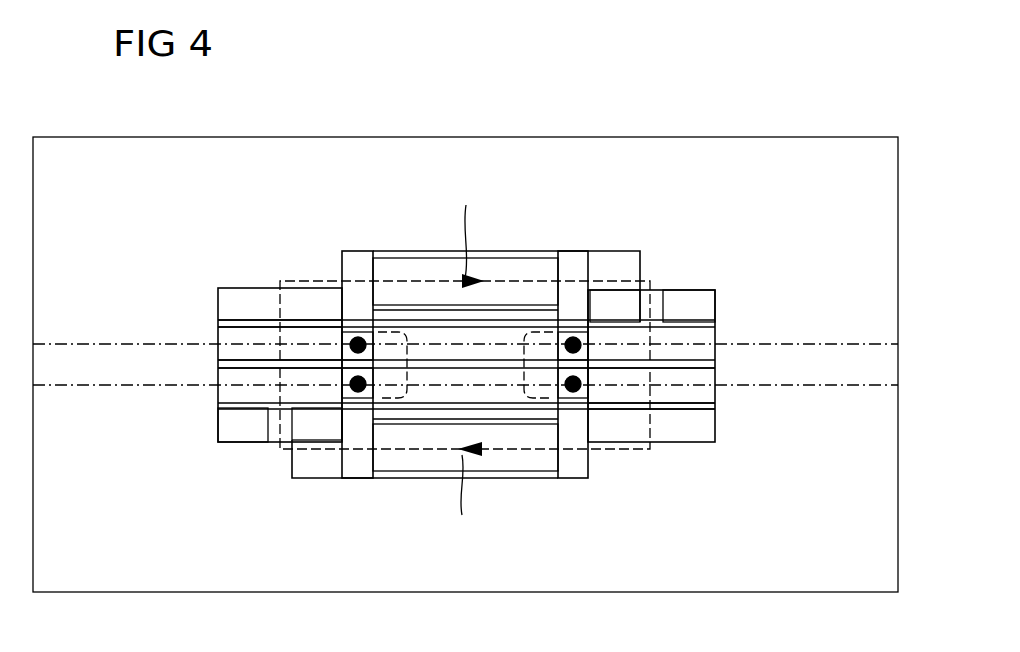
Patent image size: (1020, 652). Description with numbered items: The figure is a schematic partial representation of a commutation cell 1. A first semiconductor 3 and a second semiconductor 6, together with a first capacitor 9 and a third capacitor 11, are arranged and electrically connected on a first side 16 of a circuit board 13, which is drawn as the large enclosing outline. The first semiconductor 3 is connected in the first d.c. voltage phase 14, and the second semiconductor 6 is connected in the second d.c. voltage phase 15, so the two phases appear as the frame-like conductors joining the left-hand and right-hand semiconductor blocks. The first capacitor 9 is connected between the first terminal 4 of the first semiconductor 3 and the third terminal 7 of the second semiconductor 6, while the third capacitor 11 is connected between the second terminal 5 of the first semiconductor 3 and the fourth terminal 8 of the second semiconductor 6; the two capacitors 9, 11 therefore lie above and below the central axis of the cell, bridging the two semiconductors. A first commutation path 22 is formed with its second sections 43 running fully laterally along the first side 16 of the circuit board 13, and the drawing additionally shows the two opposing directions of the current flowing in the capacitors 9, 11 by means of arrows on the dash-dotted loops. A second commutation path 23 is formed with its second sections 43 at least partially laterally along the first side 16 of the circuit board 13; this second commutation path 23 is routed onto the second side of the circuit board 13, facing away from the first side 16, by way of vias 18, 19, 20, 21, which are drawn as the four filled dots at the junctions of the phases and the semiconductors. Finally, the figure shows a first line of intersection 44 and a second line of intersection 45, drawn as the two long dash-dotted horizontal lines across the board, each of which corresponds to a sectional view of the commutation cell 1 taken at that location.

The commutation cell 1 is at (424, 116).
The first semiconductor 3 is at (218, 325).
The first terminal 4 is at (306, 428).
The second terminal 5 is at (272, 368).
The second semiconductor 6 is at (716, 320).
The third terminal 7 is at (657, 388).
The fourth terminal 8 is at (660, 372).
The first capacitor 9 is at (520, 473).
The third capacitor 11 is at (525, 262).
The circuit board 13 is at (465, 331).
The first side 16 is at (772, 150).
The first d.c. voltage phase 14 is at (340, 262).
The second d.c. voltage phase 15 is at (600, 262).
The via 18 is at (358, 393).
The via 19 is at (358, 337).
The via 20 is at (572, 393).
The via 21 is at (572, 337).
The first commutation path 22 is at (465, 368).
The second sections 43 is at (423, 280).
The second commutation path 23 is at (525, 367).
The first line of intersection 44 is at (80, 343).
The second line of intersection 45 is at (82, 385).